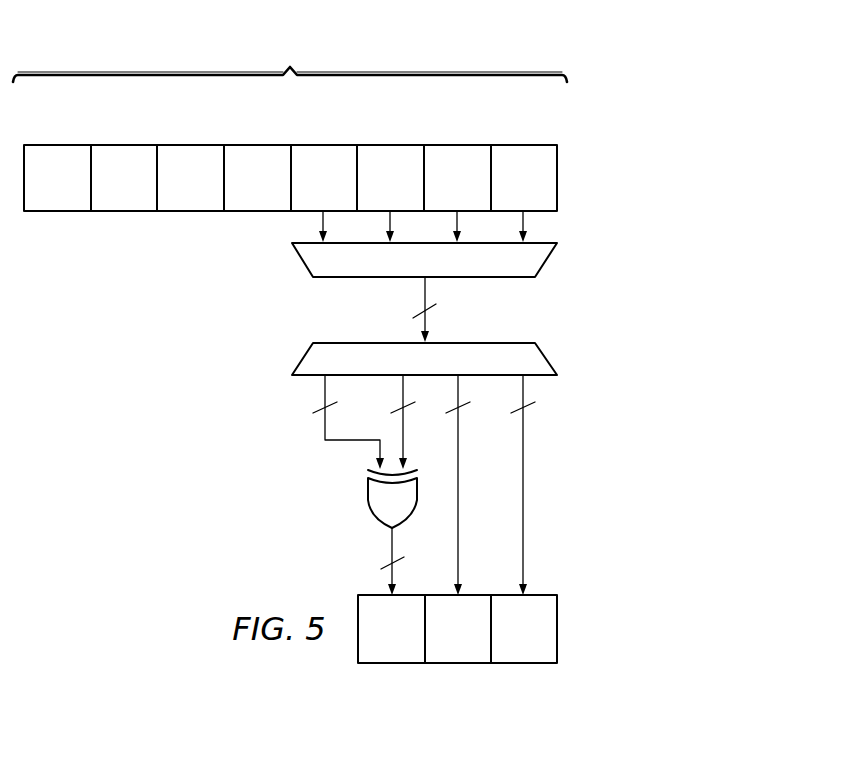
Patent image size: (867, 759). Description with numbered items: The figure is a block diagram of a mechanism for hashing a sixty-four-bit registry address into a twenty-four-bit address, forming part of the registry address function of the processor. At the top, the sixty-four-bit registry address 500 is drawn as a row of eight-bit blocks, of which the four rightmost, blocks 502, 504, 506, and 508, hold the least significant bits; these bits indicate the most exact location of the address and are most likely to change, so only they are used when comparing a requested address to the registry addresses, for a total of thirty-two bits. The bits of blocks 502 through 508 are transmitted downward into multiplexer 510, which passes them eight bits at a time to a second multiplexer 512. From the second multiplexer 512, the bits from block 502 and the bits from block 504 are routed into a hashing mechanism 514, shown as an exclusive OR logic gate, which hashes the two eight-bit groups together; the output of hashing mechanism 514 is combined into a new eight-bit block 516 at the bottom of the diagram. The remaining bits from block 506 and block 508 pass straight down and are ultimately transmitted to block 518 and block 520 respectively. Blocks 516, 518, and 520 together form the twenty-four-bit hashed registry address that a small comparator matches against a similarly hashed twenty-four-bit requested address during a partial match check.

The 64-bit registry address 500 is at (290, 110).
The block 502 is at (335, 143).
The block 504 is at (402, 143).
The block 506 is at (469, 143).
The block 508 is at (535, 143).
The multiplexer 510 is at (370, 279).
The second multiplexer 512 is at (480, 342).
The hashing mechanism 514 is at (368, 497).
The 8-bit block 516 is at (403, 664).
The block 518 is at (470, 664).
The block 520 is at (536, 664).